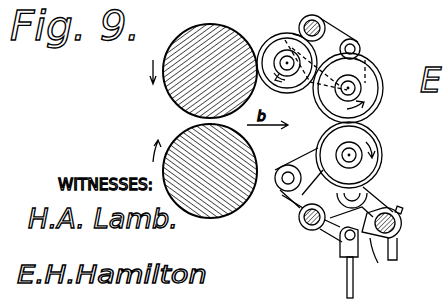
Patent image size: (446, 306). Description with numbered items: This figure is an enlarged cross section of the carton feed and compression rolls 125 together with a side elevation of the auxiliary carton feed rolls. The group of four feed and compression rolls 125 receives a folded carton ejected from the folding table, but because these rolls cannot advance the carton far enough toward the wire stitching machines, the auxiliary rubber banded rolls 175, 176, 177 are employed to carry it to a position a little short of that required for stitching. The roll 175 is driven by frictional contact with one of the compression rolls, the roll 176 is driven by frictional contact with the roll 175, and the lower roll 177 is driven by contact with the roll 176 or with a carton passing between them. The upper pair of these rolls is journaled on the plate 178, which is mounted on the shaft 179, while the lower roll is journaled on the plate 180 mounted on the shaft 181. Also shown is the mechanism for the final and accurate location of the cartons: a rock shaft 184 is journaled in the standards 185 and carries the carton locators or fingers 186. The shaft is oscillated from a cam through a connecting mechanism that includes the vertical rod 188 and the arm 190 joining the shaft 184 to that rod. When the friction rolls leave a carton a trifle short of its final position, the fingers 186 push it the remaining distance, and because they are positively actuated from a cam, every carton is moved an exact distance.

The feed and compression rolls 125 is at (198, 121).
The auxiliary rubber banded roll 175 is at (268, 37).
The auxiliary rubber banded roll 176 is at (372, 69).
The lower auxiliary roll 177 is at (383, 153).
The plate 178 is at (347, 38).
The shaft 179 is at (319, 23).
The plate 180 is at (293, 199).
The shaft 181 is at (306, 232).
The rock shaft 184 is at (396, 224).
The standards 185 is at (398, 247).
The carton locators or fingers 186 is at (318, 142).
The vertical rod 188 is at (347, 280).
The arm 190 is at (387, 262).